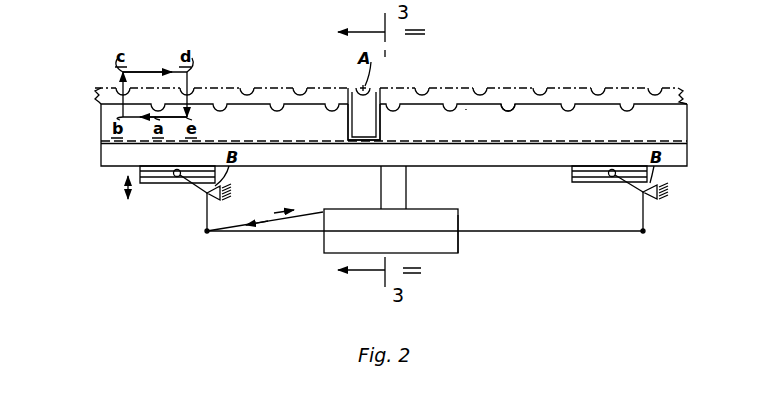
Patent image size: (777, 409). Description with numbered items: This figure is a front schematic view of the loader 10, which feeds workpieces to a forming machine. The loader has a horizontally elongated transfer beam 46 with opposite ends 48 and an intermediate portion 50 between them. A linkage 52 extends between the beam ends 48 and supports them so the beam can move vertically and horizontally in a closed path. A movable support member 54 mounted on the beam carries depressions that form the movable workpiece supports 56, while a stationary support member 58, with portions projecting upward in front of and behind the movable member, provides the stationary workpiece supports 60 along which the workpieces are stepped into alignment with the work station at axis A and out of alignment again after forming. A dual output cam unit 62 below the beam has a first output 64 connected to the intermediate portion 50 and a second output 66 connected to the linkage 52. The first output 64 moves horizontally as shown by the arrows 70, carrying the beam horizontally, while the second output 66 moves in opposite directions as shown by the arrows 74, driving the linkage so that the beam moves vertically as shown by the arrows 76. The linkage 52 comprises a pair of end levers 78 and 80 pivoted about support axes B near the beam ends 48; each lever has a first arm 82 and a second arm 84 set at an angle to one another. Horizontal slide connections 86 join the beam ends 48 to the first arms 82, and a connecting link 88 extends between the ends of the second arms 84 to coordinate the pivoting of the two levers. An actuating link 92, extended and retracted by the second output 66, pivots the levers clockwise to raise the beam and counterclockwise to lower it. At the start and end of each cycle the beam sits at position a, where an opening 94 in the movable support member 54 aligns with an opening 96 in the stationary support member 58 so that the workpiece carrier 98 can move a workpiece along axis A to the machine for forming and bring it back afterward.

The loader 10 is at (90, 173).
The transfer beam 46 is at (494, 155).
The opposite ends 48 is at (100, 149).
The intermediate portion 50 is at (325, 157).
The linkage 52 is at (264, 226).
The movable support member 54 is at (467, 117).
The movable workpiece supports 56 is at (508, 112).
The stationary support member 58 is at (371, 74).
The stationary workpiece supports 60 is at (247, 92).
The dual output cam unit 62 is at (460, 256).
The first output 64 is at (405, 194).
The second output 66 is at (322, 213).
The arrows 70 is at (396, 181).
The arrows 74 is at (268, 219).
The arrows 76 is at (124, 188).
The end lever 78 is at (206, 212).
The end lever 80 is at (646, 234).
The first arm 82 is at (196, 181).
The second arm 84 is at (210, 233).
The horizontal slide connections 86 is at (171, 188).
The connecting link 88 is at (484, 233).
The actuating link 92 is at (284, 222).
The opening 94 is at (375, 133).
The opening 96 is at (355, 87).
The workpiece carrier 98 is at (353, 118).